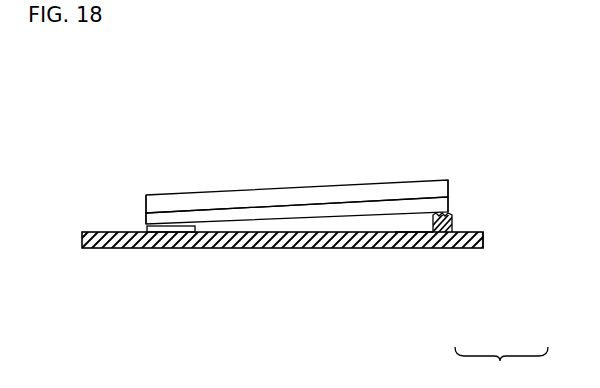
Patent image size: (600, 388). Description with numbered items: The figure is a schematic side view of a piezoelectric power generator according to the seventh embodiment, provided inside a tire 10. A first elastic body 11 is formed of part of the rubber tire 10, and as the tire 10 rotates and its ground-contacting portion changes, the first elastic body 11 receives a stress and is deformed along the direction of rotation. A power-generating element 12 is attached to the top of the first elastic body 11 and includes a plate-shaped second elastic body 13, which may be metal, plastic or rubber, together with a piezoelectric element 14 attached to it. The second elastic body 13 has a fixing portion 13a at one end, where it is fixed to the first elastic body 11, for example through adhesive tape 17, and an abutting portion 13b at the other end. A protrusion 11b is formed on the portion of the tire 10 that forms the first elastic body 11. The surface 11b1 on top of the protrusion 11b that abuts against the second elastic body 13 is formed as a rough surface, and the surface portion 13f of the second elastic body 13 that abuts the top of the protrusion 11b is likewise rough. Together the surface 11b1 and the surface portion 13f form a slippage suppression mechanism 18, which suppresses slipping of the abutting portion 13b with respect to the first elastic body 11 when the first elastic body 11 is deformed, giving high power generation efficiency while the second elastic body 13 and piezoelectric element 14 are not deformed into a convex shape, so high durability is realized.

The tire 10 is at (280, 309).
The first elastic body 11 is at (295, 249).
The protrusion 11b is at (433, 218).
The surface 11b1 is at (450, 215).
The power-generating element 12 is at (279, 205).
The second elastic body 13 is at (279, 205).
The fixing portion 13a is at (146, 219).
The abutting portion 13b is at (443, 195).
The surface portion 13f is at (436, 232).
The piezoelectric element 14 is at (245, 187).
The adhesive tape 17 is at (167, 232).
The slippage suppression mechanism 18 is at (501, 367).